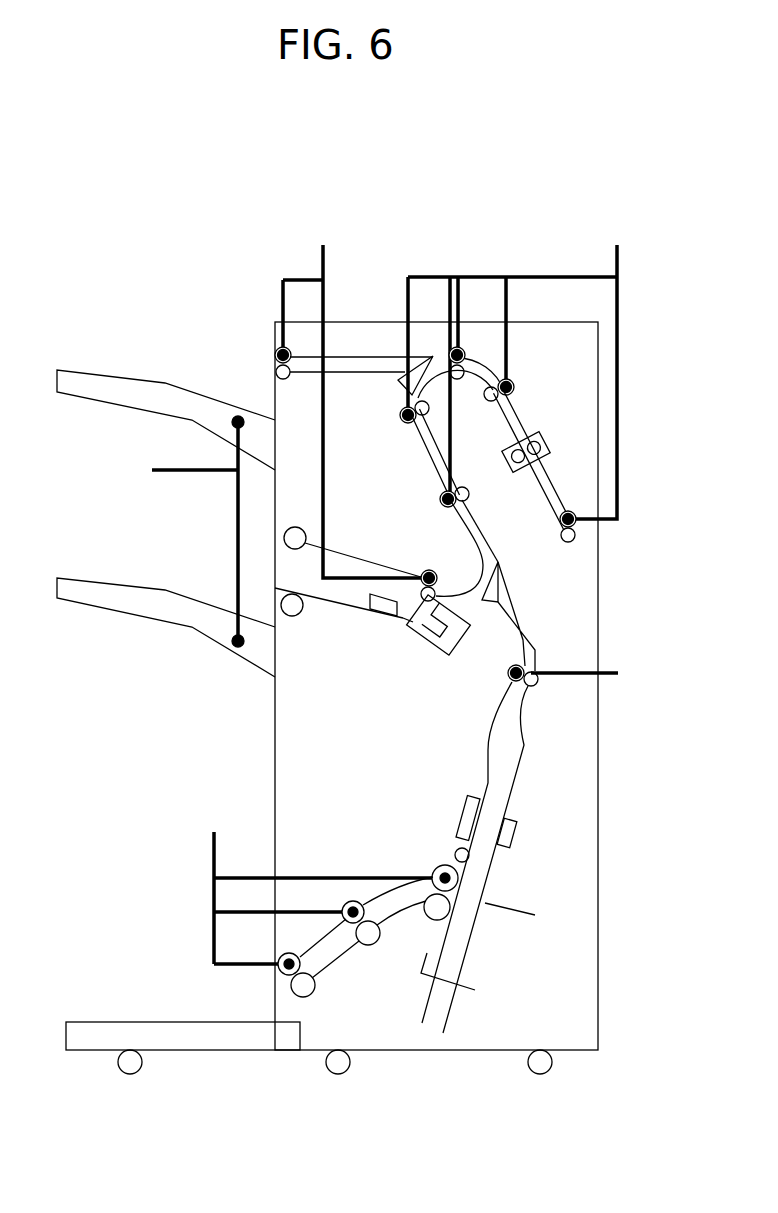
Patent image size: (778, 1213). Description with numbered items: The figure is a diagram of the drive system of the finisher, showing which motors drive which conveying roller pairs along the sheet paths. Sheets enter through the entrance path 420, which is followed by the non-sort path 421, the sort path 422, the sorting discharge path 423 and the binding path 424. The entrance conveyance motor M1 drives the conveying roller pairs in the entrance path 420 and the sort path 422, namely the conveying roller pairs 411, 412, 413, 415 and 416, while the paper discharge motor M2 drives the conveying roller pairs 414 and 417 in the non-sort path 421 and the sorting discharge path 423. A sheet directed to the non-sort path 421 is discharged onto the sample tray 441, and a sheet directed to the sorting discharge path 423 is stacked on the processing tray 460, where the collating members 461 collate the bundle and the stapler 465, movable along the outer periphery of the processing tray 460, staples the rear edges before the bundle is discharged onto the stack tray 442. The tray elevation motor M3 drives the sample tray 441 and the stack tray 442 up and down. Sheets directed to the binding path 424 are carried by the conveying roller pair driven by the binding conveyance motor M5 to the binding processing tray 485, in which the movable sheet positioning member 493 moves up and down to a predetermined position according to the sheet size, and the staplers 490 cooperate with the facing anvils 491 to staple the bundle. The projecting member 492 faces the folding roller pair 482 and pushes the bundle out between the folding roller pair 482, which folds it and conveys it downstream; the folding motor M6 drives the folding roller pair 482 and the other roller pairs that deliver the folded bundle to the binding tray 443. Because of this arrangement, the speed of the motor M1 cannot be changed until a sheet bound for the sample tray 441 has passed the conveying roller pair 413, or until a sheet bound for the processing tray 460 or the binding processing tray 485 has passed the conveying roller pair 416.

The conveying roller pair 411 is at (568, 510).
The conveying roller pair 412 is at (508, 382).
The conveying roller pair 413 is at (462, 350).
The conveying roller pair 414 is at (277, 355).
The conveying roller pair 415 is at (400, 414).
The conveying roller pair 416 is at (443, 497).
The conveying roller pair 417 is at (425, 572).
The entrance path 420 is at (520, 438).
The non-sort path 421 is at (365, 352).
The sort path 422 is at (440, 464).
The sorting discharge path 423 is at (465, 592).
The binding path 424 is at (524, 612).
The sample tray 441 is at (118, 370).
The stack tray 442 is at (118, 578).
The binding tray 443 is at (118, 1022).
The processing tray 460 is at (395, 628).
The collating members 461 is at (365, 606).
The stapler 465 is at (436, 659).
The folding roller pair 482 is at (440, 868).
The binding processing tray 485 is at (512, 800).
The staplers 490 is at (460, 812).
The anvils 491 is at (521, 835).
The projecting member 492 is at (522, 918).
The movable sheet positioning member 493 is at (462, 990).
The entrance conveyance motor M1 is at (527, 352).
The paper discharge motor M2 is at (356, 381).
The tray elevation motor M3 is at (168, 531).
The binding conveyance motor M5 is at (593, 673).
The folding motor M6 is at (314, 868).